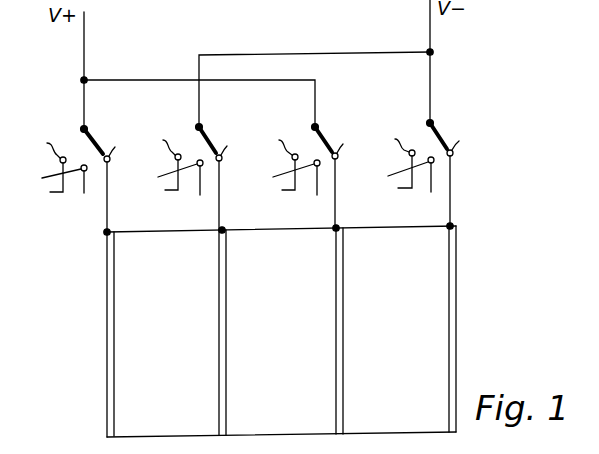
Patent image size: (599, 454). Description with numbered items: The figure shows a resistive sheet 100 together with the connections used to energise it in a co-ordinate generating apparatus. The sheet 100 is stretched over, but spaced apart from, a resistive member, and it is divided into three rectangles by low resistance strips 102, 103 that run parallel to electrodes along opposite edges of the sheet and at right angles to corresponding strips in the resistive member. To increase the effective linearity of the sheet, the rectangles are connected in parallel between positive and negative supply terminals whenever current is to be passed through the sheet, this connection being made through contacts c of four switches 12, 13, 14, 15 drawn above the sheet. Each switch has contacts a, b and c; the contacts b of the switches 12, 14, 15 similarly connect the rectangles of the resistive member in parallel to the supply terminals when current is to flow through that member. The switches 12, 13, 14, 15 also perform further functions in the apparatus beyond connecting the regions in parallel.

The switch 12 is at (93, 139).
The switch 13 is at (208, 138).
The switch 14 is at (325, 138).
The switch 15 is at (439, 133).
The sheet 100 is at (133, 343).
The low resistance strip 102 is at (226, 357).
The low resistance strip 103 is at (340, 346).